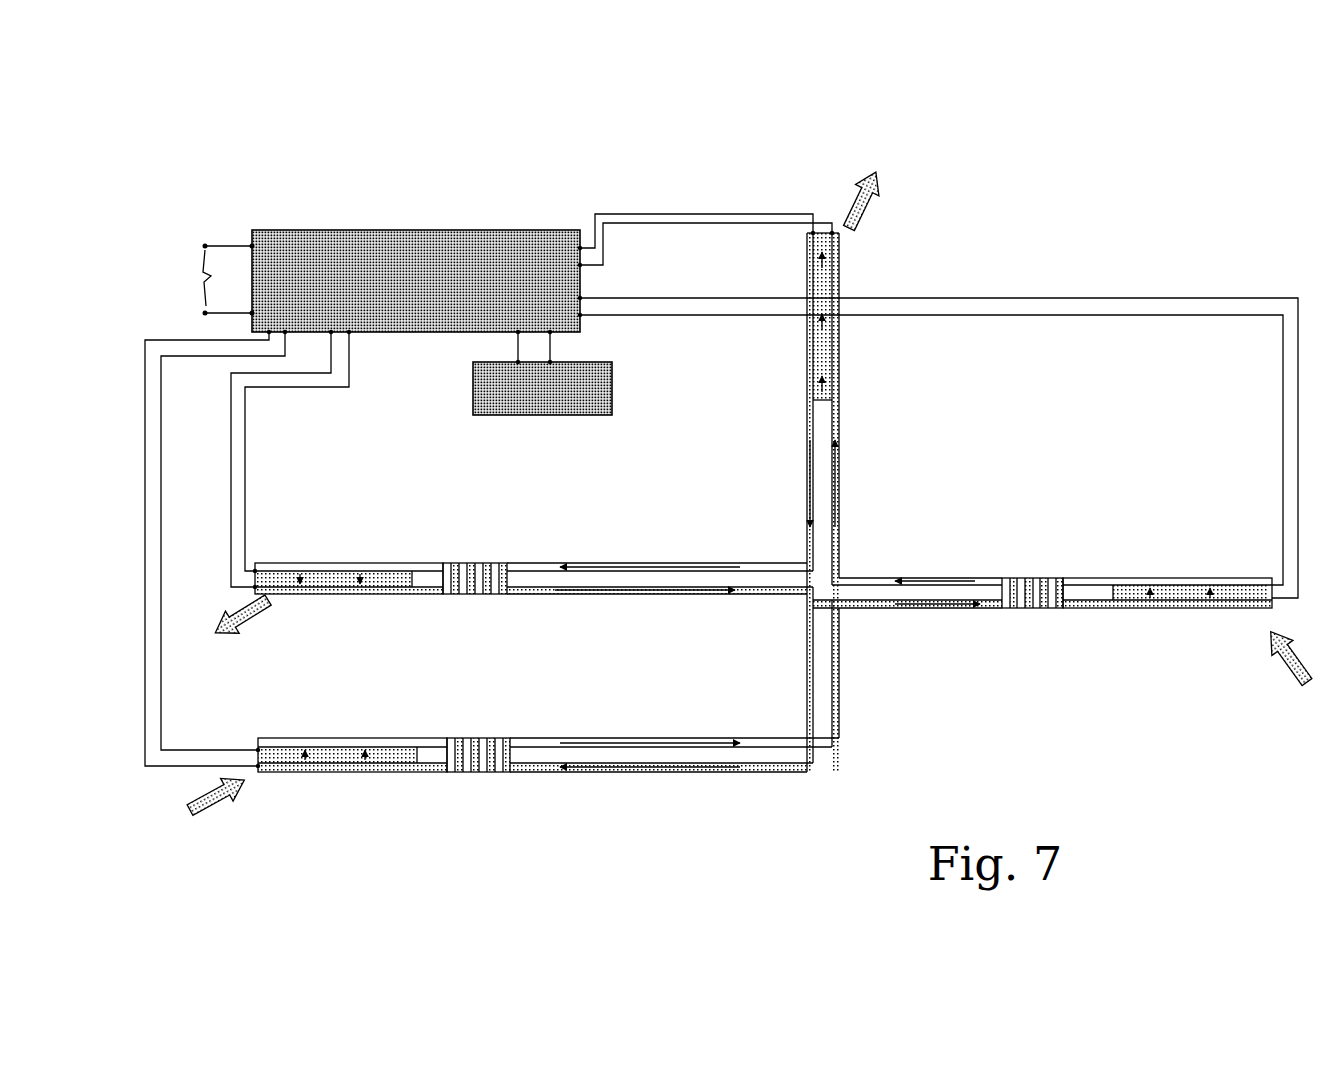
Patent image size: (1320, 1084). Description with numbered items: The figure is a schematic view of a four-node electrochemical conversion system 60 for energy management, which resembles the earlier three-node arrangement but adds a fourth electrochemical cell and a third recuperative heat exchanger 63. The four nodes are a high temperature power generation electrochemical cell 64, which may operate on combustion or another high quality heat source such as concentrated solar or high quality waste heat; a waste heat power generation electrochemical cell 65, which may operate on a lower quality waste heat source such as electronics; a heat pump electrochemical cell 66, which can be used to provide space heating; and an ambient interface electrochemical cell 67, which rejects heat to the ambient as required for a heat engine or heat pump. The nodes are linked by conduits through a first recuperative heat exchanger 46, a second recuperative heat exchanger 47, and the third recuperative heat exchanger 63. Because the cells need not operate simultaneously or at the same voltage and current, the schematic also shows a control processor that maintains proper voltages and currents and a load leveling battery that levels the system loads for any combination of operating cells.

The four-node electrochemical conversion system 60 is at (1113, 210).
The ambient interface electrochemical cell 67 is at (853, 256).
The heat pump electrochemical cell 66 is at (410, 550).
The third recuperative heat exchanger 63 is at (480, 545).
The waste heat power generation electrochemical cell 65 is at (410, 730).
The second recuperative heat exchanger 47 is at (478, 727).
The high temperature power generation electrochemical cell 64 is at (1178, 548).
The first recuperative heat exchanger 46 is at (1022, 565).